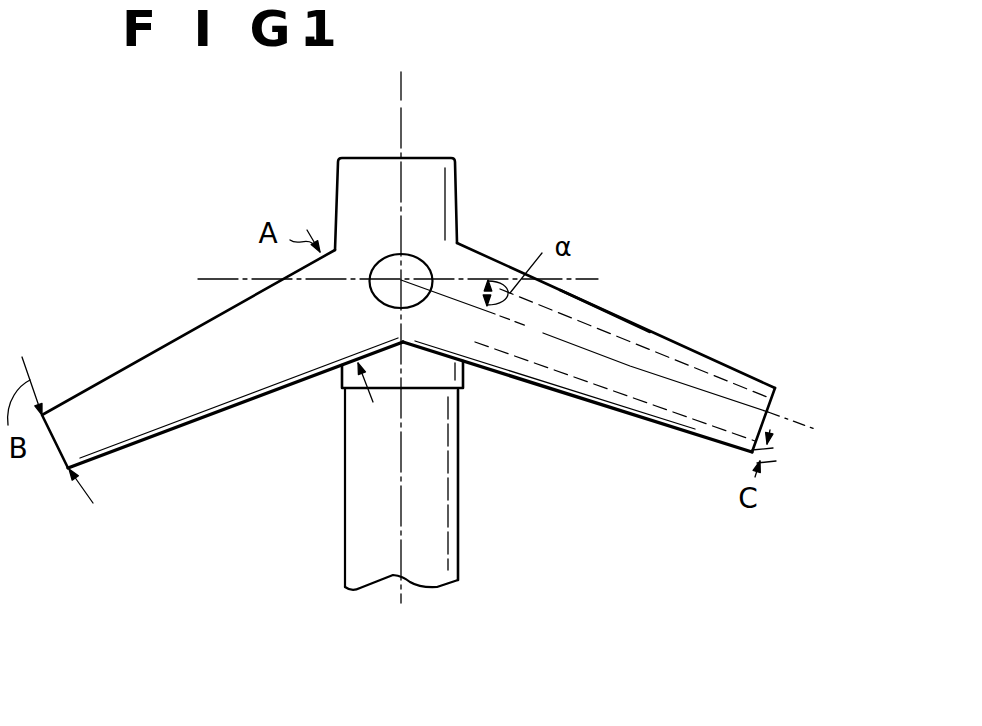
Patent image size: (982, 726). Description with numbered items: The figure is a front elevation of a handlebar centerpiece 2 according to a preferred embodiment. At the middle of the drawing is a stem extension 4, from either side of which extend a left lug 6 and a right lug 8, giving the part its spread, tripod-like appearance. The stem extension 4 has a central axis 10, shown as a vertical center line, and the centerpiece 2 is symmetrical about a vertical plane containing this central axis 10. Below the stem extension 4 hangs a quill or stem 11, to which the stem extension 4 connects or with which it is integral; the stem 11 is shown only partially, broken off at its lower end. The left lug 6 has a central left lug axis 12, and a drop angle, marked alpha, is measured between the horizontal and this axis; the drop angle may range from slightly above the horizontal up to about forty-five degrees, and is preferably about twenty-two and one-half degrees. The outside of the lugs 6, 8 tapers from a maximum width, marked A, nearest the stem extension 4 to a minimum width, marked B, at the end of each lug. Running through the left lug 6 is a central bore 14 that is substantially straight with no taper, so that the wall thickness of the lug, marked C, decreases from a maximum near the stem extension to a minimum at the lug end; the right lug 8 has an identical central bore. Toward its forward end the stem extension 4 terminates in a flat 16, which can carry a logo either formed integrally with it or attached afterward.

The centerpiece 2 is at (618, 187).
The stem extension 4 is at (350, 213).
The left lug 6 is at (583, 298).
The right lug 8 is at (213, 405).
The central axis 10 is at (402, 92).
The quill or stem 11 is at (442, 522).
The central left lug axis 12 is at (784, 426).
The central bore 14 is at (634, 326).
The flat 16 is at (415, 270).